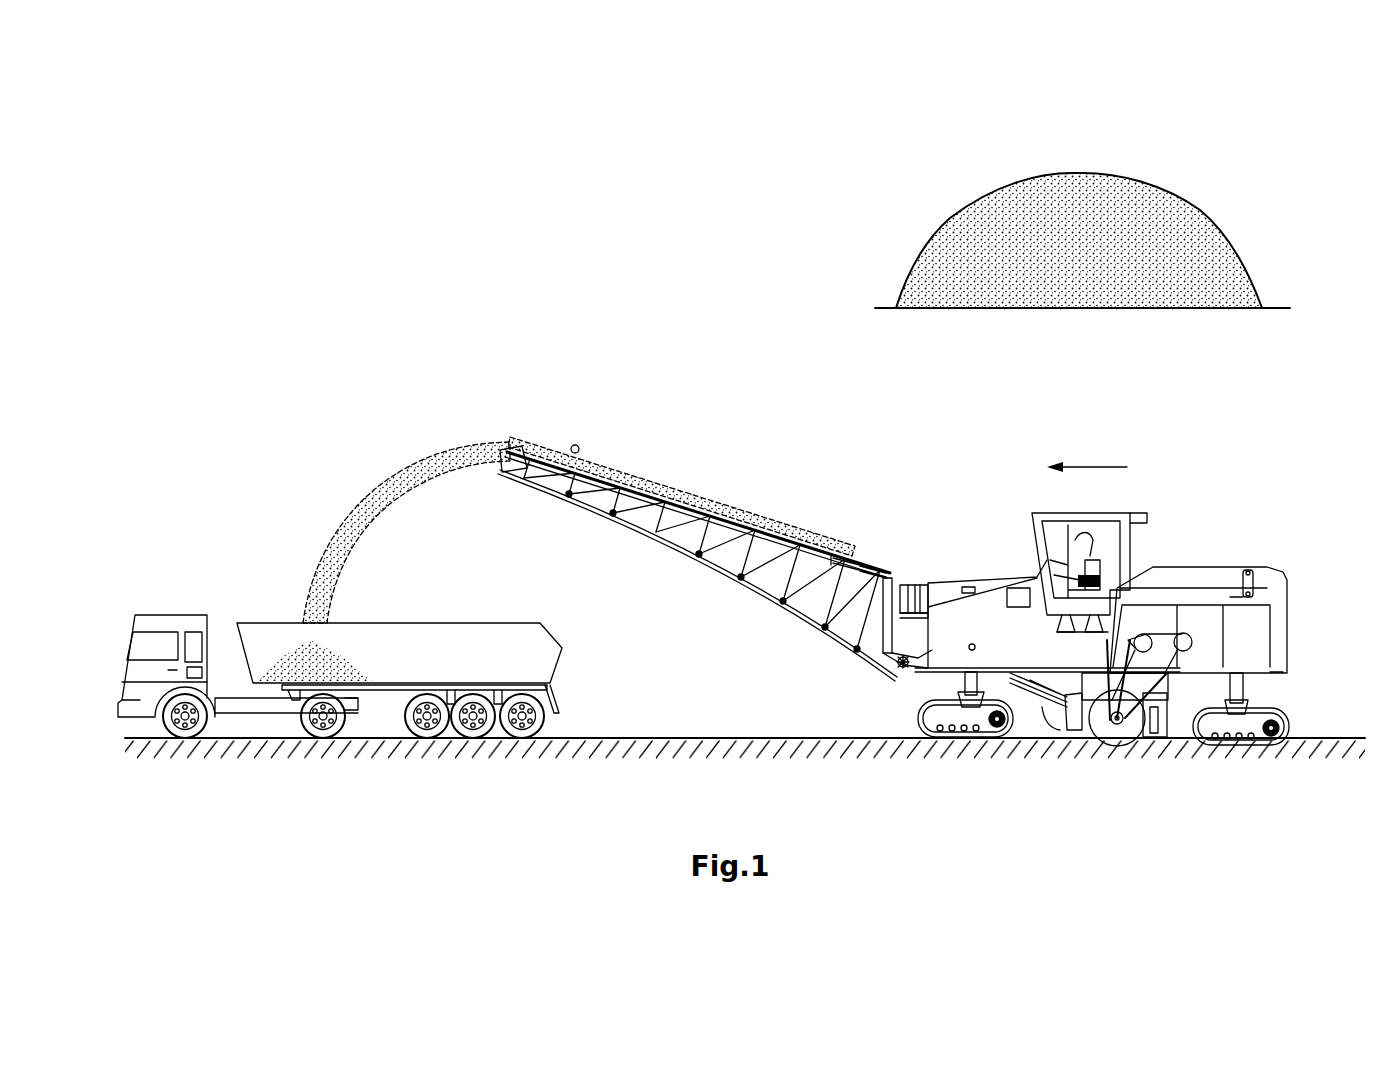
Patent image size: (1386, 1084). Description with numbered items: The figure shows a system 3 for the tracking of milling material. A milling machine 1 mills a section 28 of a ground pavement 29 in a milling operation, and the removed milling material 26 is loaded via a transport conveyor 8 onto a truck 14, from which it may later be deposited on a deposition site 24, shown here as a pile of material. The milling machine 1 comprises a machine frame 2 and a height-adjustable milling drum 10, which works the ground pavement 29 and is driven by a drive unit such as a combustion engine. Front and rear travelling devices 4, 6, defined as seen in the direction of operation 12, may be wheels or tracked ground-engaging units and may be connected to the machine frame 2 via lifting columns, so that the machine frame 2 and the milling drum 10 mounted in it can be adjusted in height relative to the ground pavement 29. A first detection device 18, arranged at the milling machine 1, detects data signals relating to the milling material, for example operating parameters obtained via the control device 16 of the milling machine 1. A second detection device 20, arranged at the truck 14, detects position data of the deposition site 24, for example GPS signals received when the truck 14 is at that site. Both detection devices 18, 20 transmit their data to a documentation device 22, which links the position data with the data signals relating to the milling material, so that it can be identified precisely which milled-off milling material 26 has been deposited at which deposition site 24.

The milling machine 1 is at (923, 578).
The machine frame 2 is at (988, 648).
The system 3 is at (767, 507).
The front travelling device 4 is at (917, 720).
The rear travelling device 6 is at (1292, 728).
The transport conveyor 8 is at (710, 513).
The milling drum 10 is at (1100, 723).
The direction of operation 12 is at (1100, 467).
The truck 14 is at (340, 637).
The control device 16 is at (1035, 554).
The first detection device 18 is at (1025, 543).
The second detection device 20 is at (203, 672).
The documentation device 22 is at (1022, 598).
The deposition site 24 is at (1153, 228).
The milling material 26 is at (382, 500).
The section of ground pavement 28 is at (968, 770).
The ground pavement 29 is at (825, 748).